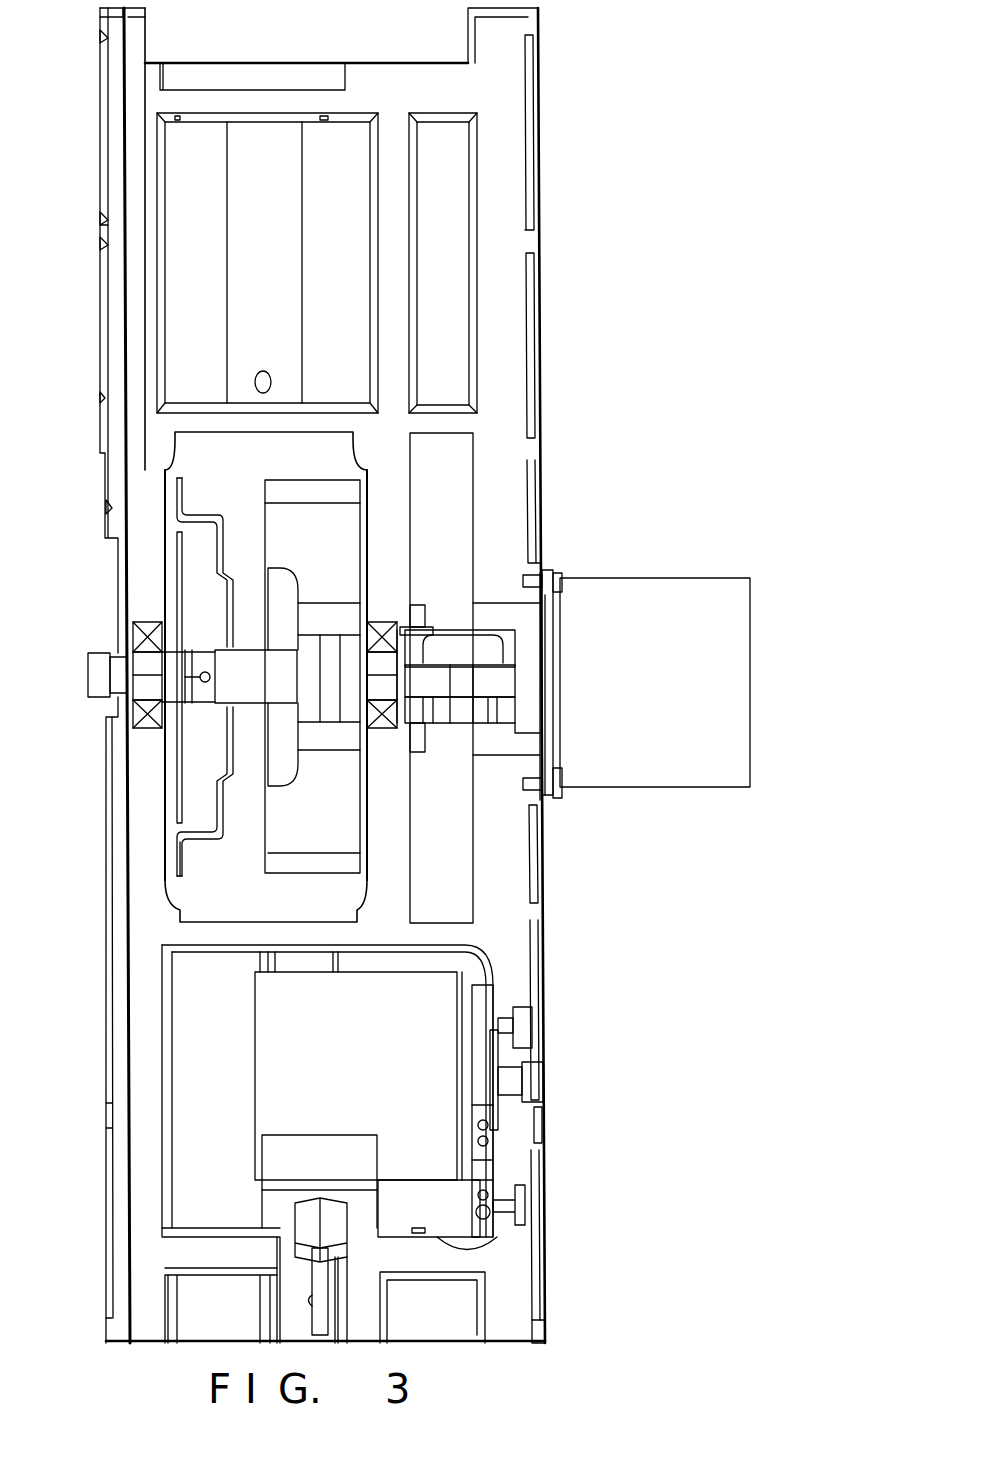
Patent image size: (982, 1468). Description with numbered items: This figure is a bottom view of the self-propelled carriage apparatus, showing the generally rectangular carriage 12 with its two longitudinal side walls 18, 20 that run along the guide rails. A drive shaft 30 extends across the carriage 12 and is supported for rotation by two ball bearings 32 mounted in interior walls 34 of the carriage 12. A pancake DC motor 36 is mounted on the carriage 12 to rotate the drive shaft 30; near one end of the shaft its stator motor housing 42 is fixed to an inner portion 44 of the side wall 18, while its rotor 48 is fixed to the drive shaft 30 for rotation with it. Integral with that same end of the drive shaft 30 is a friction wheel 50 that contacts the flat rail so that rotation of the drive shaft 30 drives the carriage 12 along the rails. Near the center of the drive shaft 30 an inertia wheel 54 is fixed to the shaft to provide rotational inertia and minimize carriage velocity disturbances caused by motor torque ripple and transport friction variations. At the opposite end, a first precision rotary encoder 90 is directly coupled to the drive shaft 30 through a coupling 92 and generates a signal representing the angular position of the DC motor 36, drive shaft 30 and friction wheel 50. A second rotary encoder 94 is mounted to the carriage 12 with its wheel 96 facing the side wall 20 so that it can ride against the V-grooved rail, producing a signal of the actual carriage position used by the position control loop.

The carriage 12 is at (538, 85).
The longitudinal side wall 18 is at (135, 510).
The longitudinal side wall 20 is at (512, 367).
The drive shaft 30 is at (272, 689).
The ball bearings 32 is at (145, 625).
The interior walls 34 is at (147, 437).
The pancake DC motor 36 is at (190, 515).
The stator motor housing 42 is at (185, 870).
The inner portion 44 is at (168, 462).
The rotor 48 is at (180, 560).
The friction wheel 50 is at (88, 665).
The inertia wheel 54 is at (283, 822).
The first precision rotary encoder 90 is at (670, 697).
The coupling 92 is at (462, 713).
The second rotary encoder 94 is at (377, 1057).
The wheel 96 is at (530, 1080).